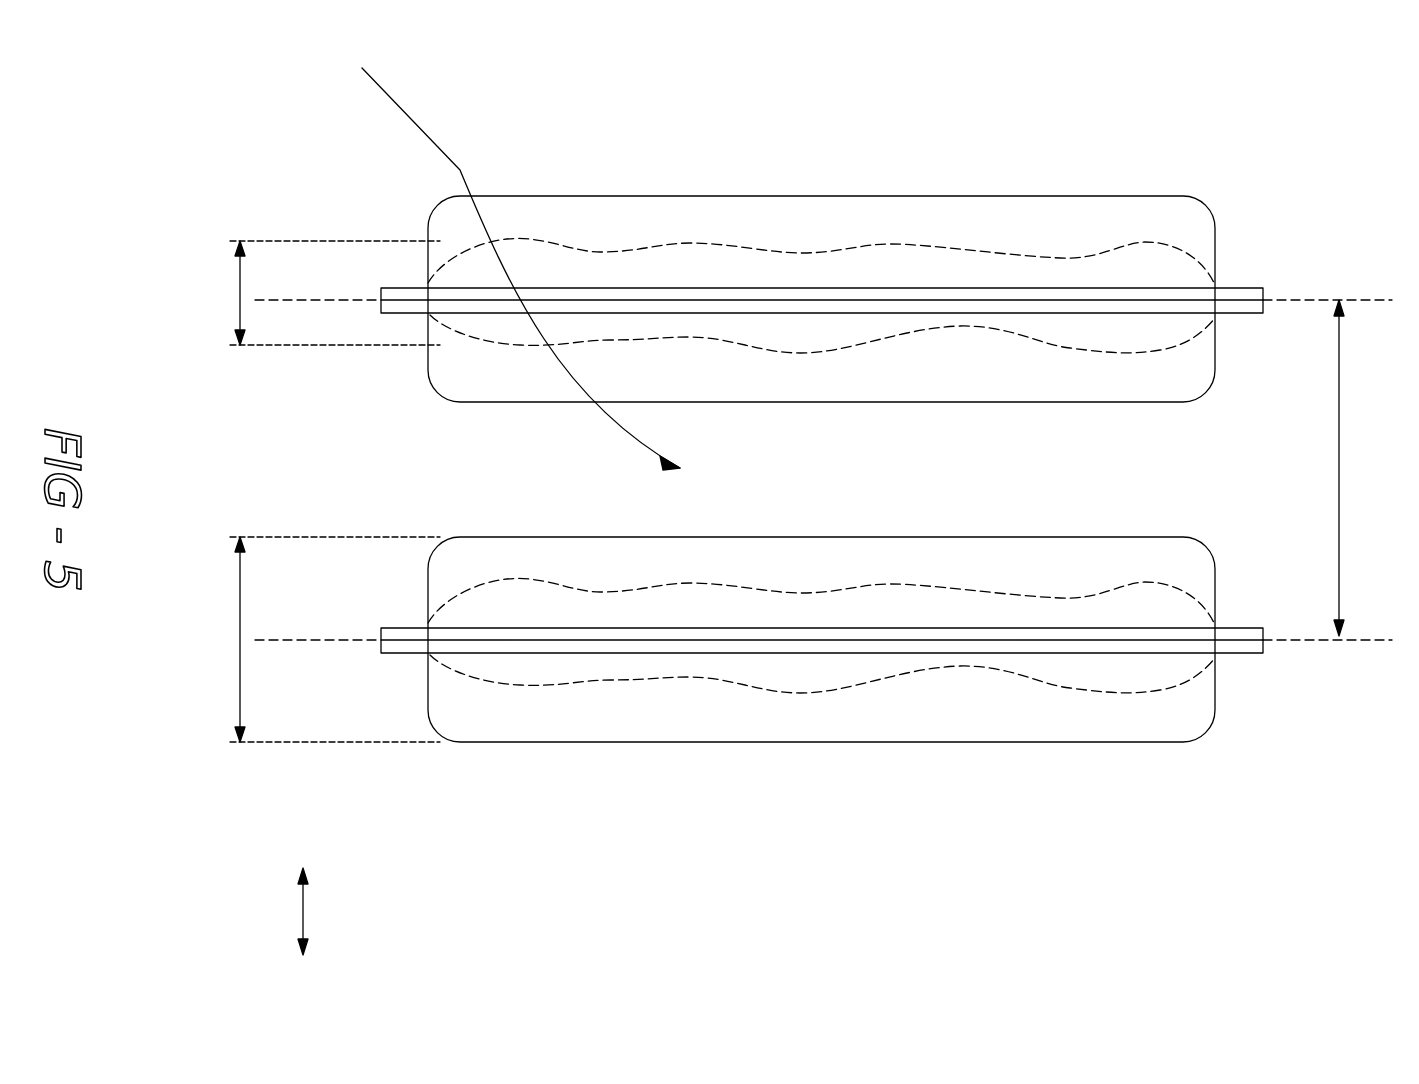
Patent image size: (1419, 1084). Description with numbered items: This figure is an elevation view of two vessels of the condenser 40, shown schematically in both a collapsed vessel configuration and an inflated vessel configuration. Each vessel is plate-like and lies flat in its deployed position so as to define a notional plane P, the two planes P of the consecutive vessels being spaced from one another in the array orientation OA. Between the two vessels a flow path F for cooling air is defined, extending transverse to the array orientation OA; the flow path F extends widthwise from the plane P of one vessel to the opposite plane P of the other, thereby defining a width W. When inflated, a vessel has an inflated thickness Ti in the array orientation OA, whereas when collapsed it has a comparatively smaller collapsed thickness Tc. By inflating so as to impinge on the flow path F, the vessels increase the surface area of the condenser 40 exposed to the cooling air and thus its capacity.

The condenser 40 is at (1310, 833).
The flow path F is at (418, 118).
The collapsed thickness Tc is at (240, 297).
The inflated thickness Ti is at (240, 640).
The width of the flow path W is at (1339, 468).
The notional plane P is at (1372, 300).
The array orientation OA is at (303, 913).